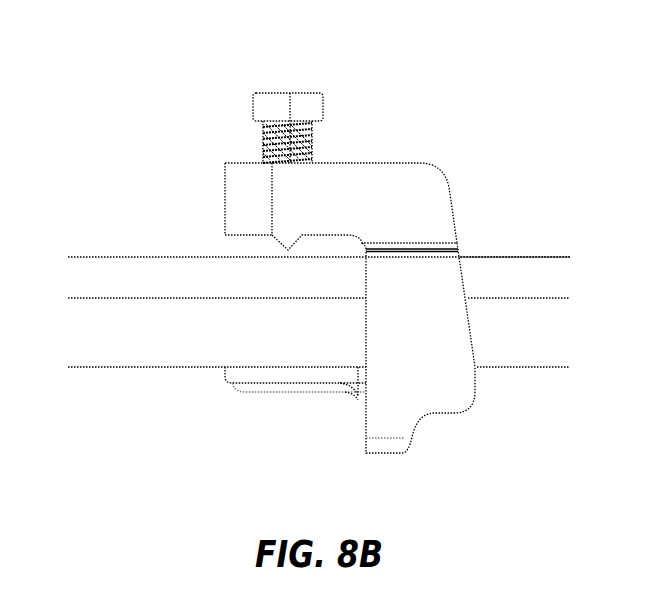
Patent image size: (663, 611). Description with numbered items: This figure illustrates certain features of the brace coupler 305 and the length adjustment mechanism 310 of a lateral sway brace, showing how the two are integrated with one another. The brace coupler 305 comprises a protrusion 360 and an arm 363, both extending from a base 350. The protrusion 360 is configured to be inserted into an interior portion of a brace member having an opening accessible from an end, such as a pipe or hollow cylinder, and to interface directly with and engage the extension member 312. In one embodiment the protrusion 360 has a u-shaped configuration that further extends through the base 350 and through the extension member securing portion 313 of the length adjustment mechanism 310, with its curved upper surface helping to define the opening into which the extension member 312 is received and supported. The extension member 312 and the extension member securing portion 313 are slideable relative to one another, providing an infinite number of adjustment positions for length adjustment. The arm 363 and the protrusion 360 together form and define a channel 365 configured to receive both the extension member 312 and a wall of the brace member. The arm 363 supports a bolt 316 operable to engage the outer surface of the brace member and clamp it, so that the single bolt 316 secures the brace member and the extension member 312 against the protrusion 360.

The brace coupler 305 is at (193, 66).
The length adjustment mechanism 310 is at (122, 168).
The extension member 312 is at (121, 368).
The extension member securing portion 313 is at (516, 205).
The bolt 316 is at (288, 92).
The base 350 is at (377, 342).
The protrusion 360 is at (282, 393).
The arm 363 is at (225, 175).
The channel 365 is at (212, 248).